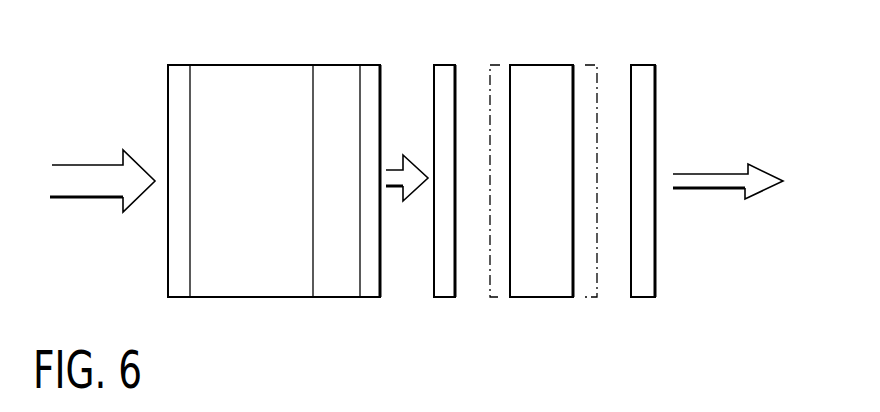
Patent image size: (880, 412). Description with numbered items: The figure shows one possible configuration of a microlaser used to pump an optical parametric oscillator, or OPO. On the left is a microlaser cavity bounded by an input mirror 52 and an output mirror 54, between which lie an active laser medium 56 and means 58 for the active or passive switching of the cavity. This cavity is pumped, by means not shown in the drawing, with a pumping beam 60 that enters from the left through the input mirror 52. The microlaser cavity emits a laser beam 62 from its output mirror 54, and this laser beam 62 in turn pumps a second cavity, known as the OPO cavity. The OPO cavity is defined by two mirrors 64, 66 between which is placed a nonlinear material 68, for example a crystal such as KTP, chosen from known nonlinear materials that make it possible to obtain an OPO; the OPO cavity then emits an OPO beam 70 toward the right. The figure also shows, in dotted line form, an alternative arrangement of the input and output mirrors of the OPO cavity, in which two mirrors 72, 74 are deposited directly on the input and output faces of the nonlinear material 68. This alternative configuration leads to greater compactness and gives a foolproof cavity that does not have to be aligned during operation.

The input mirror 52 is at (173, 85).
The output mirror 54 is at (369, 292).
The active laser medium 56 is at (226, 292).
The switching means 58 is at (323, 70).
The pumping beam 60 is at (78, 192).
The laser beam 62 is at (395, 187).
The OPO cavity mirror 64 is at (443, 70).
The OPO cavity mirror 66 is at (652, 284).
The nonlinear material 68 is at (540, 70).
The OPO beam 70 is at (708, 176).
The mirror 72 is at (500, 296).
The mirror 74 is at (590, 296).